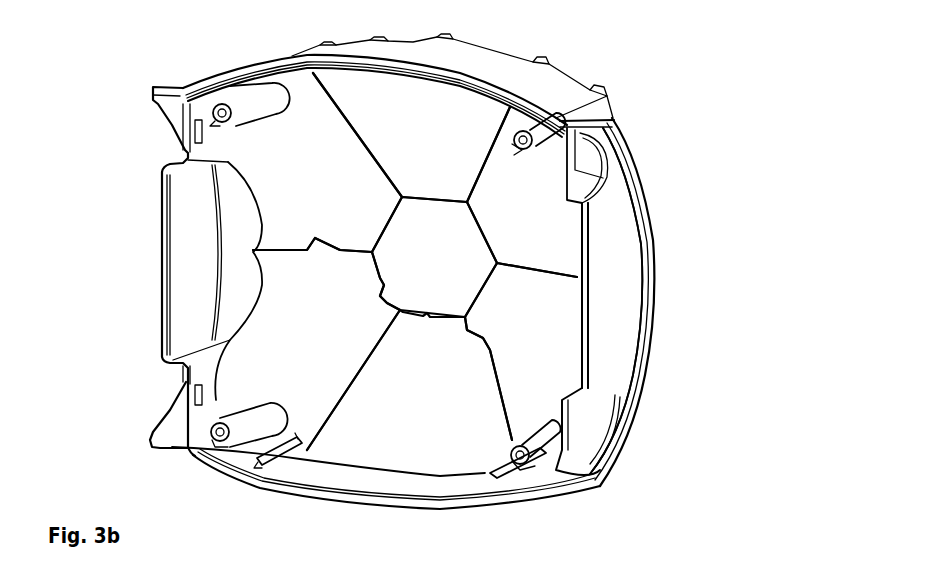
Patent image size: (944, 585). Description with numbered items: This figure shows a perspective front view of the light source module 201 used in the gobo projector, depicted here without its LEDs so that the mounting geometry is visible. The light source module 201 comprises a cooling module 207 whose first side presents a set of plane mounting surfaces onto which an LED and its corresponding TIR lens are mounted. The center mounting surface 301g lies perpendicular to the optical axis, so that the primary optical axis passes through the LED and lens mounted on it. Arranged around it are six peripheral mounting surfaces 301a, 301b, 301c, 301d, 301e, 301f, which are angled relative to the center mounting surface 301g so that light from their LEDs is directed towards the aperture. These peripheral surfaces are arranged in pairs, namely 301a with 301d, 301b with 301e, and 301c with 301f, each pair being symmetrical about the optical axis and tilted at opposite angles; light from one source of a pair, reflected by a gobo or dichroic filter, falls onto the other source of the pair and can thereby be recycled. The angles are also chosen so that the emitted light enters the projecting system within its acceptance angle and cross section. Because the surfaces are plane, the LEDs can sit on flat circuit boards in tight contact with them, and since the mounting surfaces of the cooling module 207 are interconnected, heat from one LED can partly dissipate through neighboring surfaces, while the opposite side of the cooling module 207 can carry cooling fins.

The light source module 201 is at (611, 57).
The cooling module 207 is at (602, 245).
The peripheral mounting surface 301a is at (411, 137).
The peripheral mounting surface 301b is at (522, 192).
The peripheral mounting surface 301c is at (521, 351).
The peripheral mounting surface 301d is at (409, 380).
The peripheral mounting surface 301e is at (326, 344).
The peripheral mounting surface 301f is at (327, 162).
The center mounting surface 301g is at (434, 257).